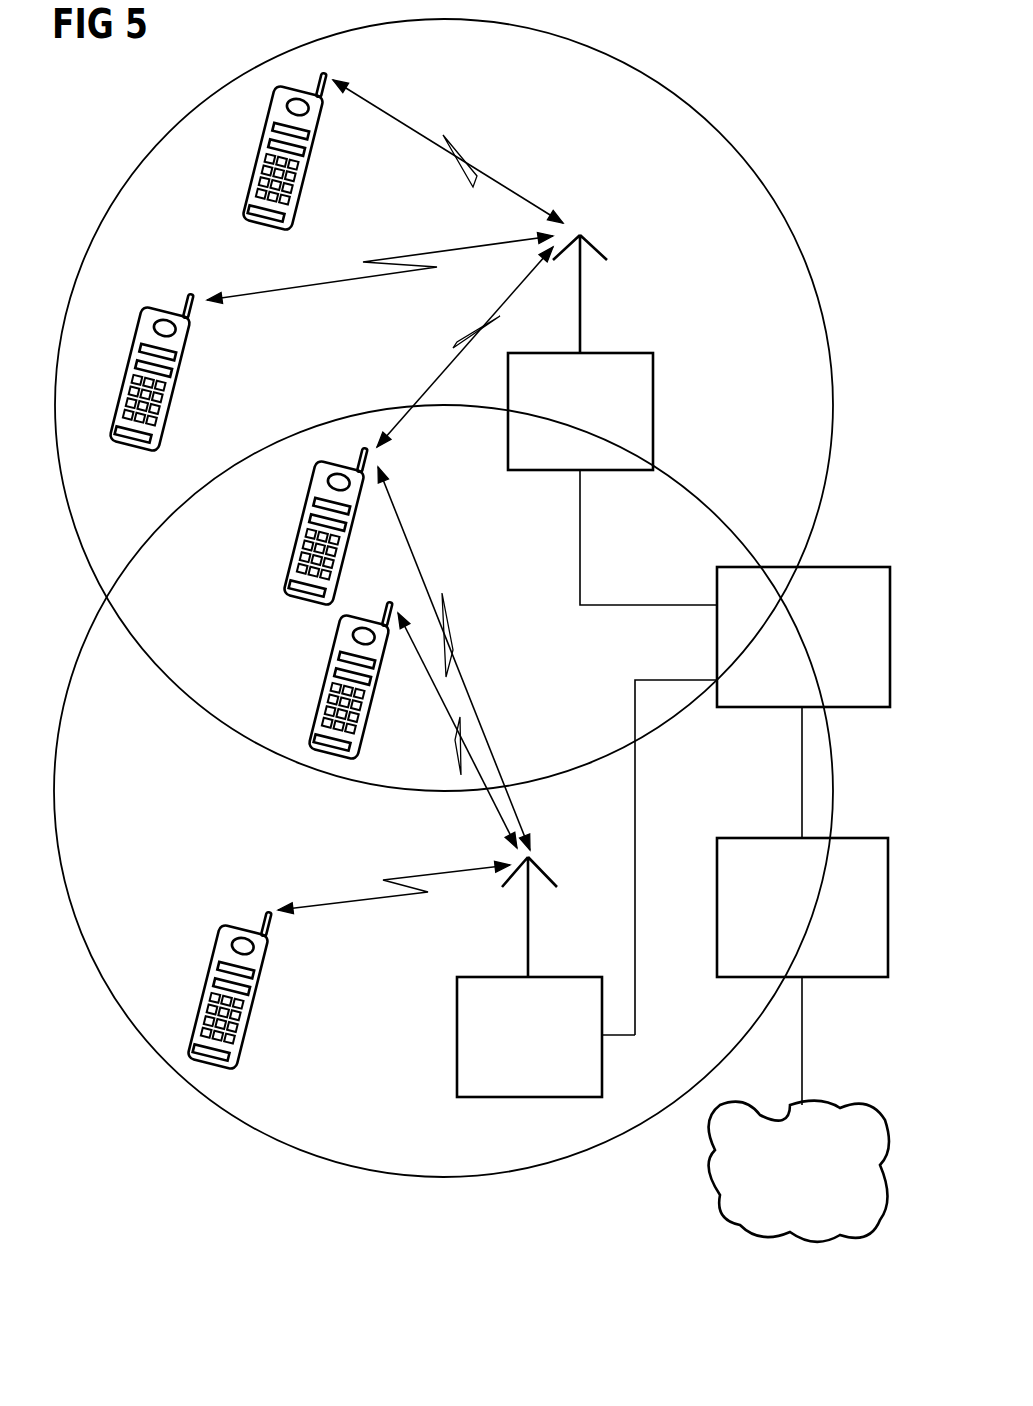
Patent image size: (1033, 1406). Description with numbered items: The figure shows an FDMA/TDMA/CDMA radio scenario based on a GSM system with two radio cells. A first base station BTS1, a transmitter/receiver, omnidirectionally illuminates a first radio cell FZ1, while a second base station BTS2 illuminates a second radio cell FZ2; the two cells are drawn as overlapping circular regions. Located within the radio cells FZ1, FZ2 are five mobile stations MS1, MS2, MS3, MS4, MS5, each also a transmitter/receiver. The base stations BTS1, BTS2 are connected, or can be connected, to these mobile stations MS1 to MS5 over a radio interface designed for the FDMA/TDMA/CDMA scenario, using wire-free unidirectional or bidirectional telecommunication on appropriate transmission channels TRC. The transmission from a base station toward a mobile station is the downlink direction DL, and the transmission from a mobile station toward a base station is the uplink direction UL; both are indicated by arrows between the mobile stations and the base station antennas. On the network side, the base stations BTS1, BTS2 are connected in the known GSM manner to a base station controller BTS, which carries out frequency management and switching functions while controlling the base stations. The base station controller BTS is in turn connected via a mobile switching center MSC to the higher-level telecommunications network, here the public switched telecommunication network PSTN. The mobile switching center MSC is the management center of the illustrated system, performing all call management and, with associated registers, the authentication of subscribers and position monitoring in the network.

The first radio cell FZ1 is at (668, 85).
The second radio cell FZ2 is at (285, 1145).
The mobile station MS1 is at (250, 170).
The mobile station MS2 is at (150, 305).
The mobile station MS3 is at (300, 530).
The mobile station MS4 is at (320, 680).
The mobile station MS5 is at (205, 972).
The first base station BTS1 is at (654, 392).
The second base station BTS2 is at (457, 1068).
The base station controller BTS is at (717, 637).
The mobile switching center MSC is at (748, 838).
The public switched telecommunication network PSTN is at (799, 1171).
The downlink direction DL is at (342, 80).
The uplink direction UL is at (563, 220).
The transmission channel TRC is at (402, 515).